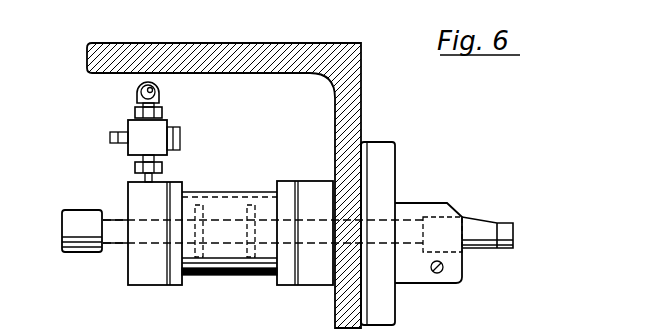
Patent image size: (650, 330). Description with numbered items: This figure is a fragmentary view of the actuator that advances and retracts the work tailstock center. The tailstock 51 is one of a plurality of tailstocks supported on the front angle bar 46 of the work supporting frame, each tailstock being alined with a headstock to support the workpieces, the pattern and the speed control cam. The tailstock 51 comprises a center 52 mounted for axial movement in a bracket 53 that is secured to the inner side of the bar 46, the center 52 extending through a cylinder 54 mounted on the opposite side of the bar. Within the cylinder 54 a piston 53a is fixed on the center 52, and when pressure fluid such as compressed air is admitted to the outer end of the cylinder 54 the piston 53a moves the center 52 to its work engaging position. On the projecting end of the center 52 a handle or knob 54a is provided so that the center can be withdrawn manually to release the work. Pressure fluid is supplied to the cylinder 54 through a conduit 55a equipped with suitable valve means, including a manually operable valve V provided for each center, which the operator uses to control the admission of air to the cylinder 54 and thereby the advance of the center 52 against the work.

The front angle bar 46 is at (362, 92).
The tailstock 51 is at (428, 193).
The center 52 is at (515, 238).
The bracket 53 is at (391, 178).
The piston 53a is at (199, 198).
The cylinder 54 is at (258, 192).
The handle or knob 54a is at (78, 213).
The conduit 55a is at (160, 93).
The manually operable valve V is at (125, 121).